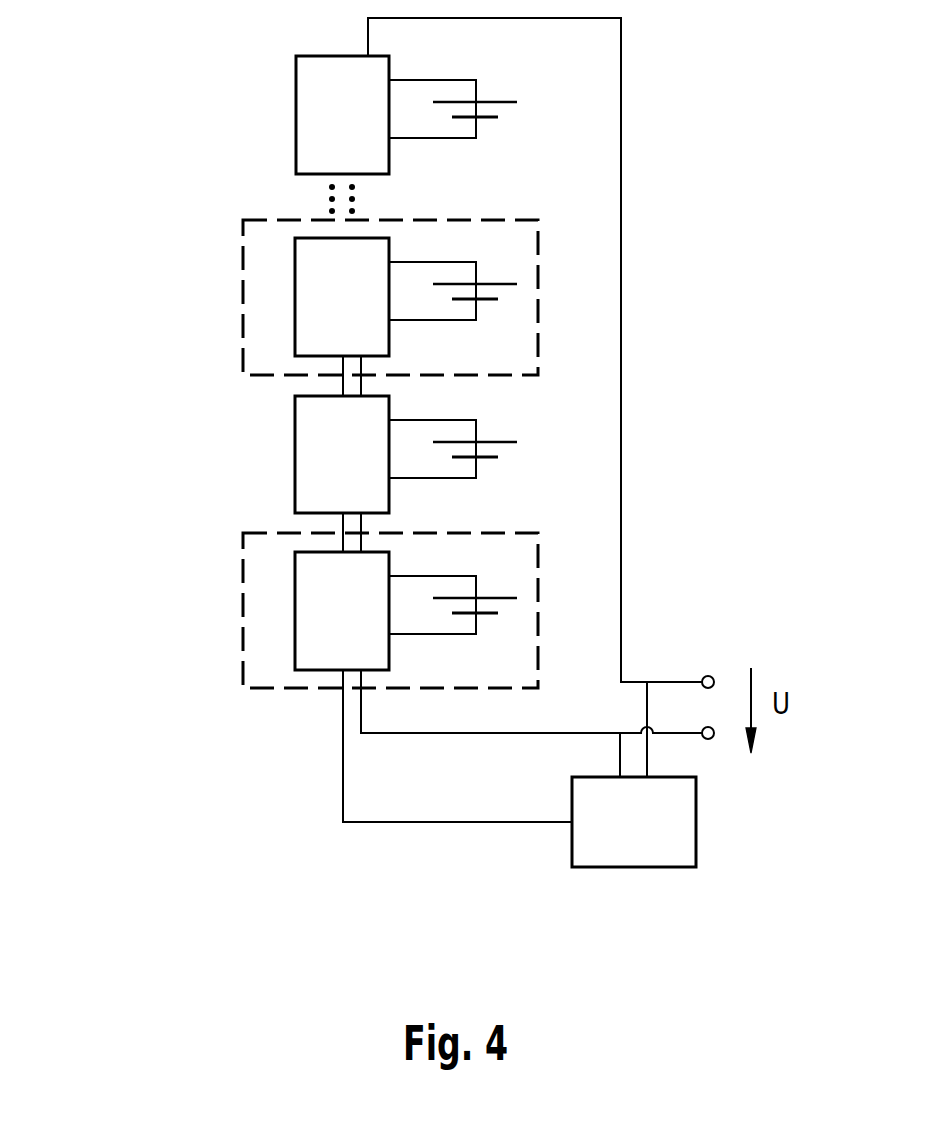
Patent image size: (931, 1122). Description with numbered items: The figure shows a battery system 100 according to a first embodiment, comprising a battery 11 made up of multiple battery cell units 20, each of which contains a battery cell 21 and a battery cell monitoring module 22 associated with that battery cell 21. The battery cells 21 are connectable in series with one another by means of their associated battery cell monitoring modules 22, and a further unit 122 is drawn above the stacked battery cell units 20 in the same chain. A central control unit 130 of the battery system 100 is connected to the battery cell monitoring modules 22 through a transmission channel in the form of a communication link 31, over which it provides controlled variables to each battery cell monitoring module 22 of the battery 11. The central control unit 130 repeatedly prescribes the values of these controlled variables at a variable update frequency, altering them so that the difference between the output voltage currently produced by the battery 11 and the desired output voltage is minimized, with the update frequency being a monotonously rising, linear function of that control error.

The battery system 100 is at (677, 125).
The battery 11 is at (160, 535).
The battery cell unit 20 is at (243, 332).
The battery cell 21 is at (495, 111).
The battery cell monitoring module 22 is at (295, 350).
The top monitoring unit 122 is at (296, 105).
The central control unit 130 is at (696, 820).
The communication link 31 is at (406, 822).